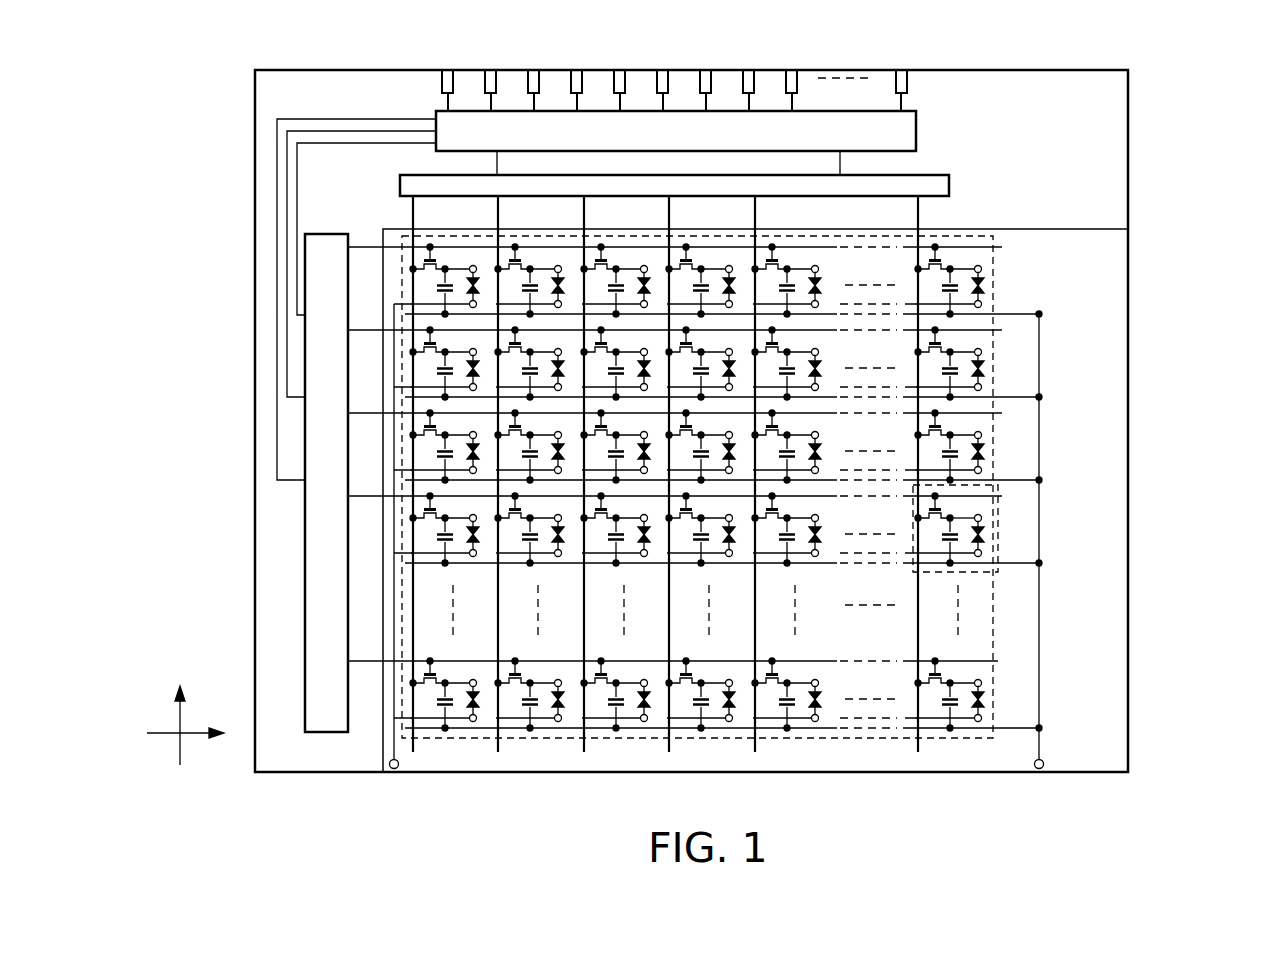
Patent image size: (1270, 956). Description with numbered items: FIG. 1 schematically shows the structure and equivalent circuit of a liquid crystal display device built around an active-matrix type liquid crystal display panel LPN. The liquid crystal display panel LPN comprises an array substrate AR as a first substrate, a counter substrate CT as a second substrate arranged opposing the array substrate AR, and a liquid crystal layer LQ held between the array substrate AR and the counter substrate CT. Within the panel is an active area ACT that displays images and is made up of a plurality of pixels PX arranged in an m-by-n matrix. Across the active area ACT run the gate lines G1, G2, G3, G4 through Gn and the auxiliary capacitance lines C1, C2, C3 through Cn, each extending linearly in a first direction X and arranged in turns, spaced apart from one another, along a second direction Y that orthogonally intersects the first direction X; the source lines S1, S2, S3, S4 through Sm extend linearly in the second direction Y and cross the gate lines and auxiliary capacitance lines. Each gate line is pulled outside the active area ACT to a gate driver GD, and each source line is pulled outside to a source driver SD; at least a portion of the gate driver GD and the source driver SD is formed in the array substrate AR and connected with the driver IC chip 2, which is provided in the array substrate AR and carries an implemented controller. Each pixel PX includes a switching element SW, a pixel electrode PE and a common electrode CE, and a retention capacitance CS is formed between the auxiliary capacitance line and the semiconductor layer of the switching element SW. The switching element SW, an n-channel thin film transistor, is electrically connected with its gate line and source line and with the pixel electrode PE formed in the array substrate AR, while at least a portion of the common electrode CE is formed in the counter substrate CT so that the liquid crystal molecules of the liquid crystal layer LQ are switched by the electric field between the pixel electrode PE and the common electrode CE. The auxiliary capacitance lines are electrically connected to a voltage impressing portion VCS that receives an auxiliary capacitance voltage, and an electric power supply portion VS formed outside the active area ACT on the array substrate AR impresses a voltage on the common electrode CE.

The driver IC chip 2 is at (915, 111).
The liquid crystal display panel LPN is at (1166, 80).
The source driver SD is at (950, 182).
The gate driver GD is at (305, 598).
The counter substrate CT is at (1100, 229).
The electric power supply portion VS is at (397, 767).
The voltage impressing portion VCS is at (1043, 761).
The active area ACT is at (993, 345).
The array substrate AR is at (322, 762).
The pixel PX is at (998, 575).
The switching element SW is at (920, 509).
The retention capacitance CS is at (934, 540).
The pixel electrode PE is at (981, 517).
The liquid crystal layer LQ is at (986, 535).
The common electrode CE is at (982, 553).
The gate line G1 is at (363, 247).
The gate line G2 is at (363, 330).
The gate line G3 is at (363, 413).
The gate line G4 is at (363, 496).
The gate line Gn is at (363, 661).
The source line S1 is at (415, 213).
The source line S2 is at (500, 213).
The source line S3 is at (586, 213).
The source line S4 is at (671, 213).
The source line Sm is at (922, 213).
The auxiliary capacitance line C1 is at (1017, 314).
The auxiliary capacitance line C2 is at (1017, 397).
The auxiliary capacitance line C3 is at (1017, 480).
The auxiliary capacitance line Cn is at (1017, 728).
The first direction X is at (195, 734).
The second direction Y is at (178, 714).